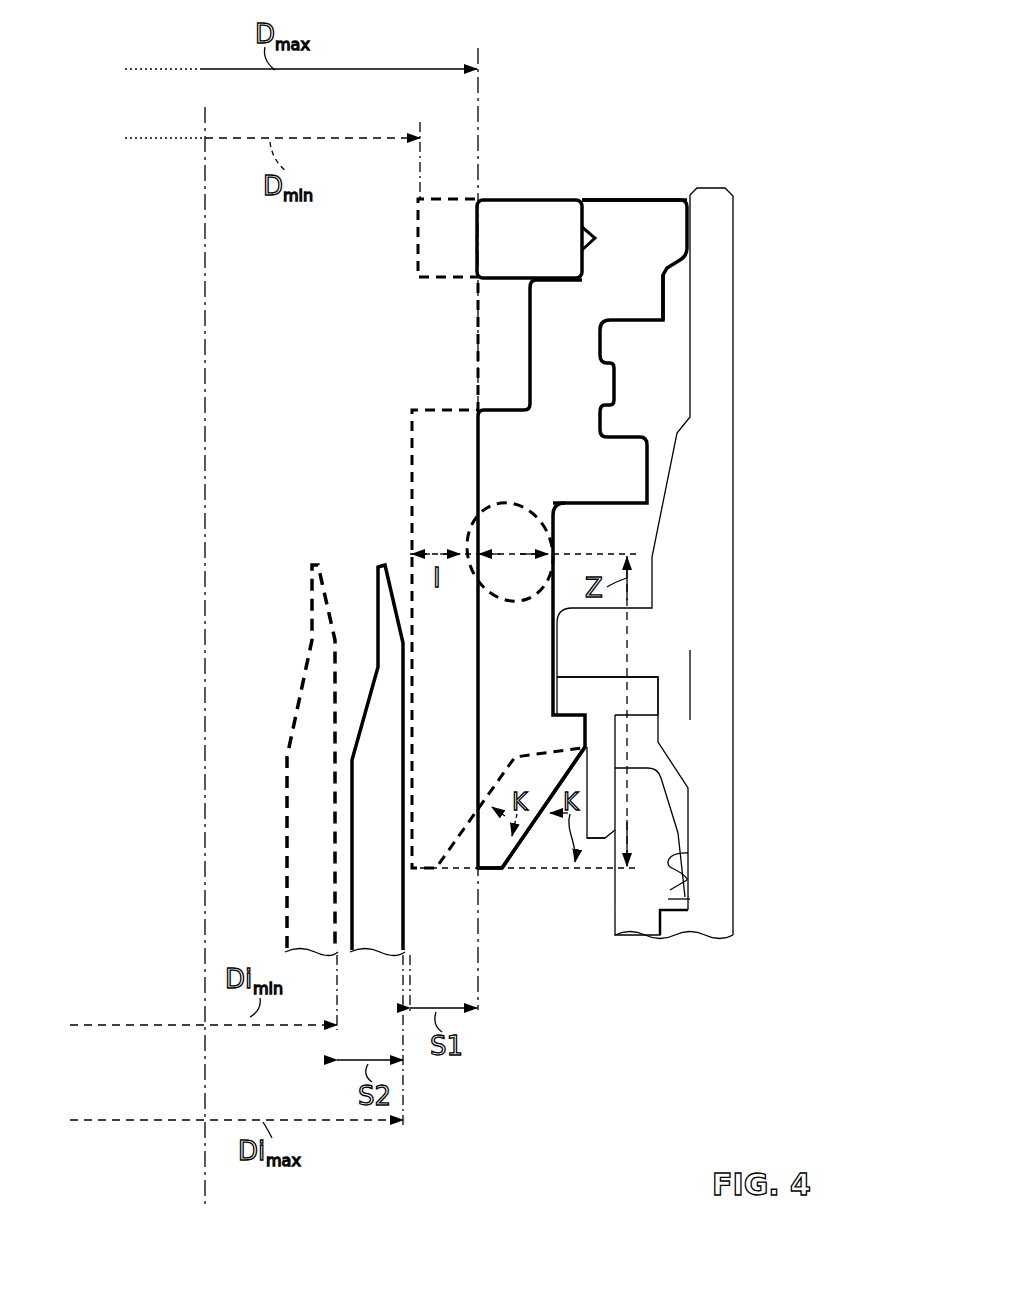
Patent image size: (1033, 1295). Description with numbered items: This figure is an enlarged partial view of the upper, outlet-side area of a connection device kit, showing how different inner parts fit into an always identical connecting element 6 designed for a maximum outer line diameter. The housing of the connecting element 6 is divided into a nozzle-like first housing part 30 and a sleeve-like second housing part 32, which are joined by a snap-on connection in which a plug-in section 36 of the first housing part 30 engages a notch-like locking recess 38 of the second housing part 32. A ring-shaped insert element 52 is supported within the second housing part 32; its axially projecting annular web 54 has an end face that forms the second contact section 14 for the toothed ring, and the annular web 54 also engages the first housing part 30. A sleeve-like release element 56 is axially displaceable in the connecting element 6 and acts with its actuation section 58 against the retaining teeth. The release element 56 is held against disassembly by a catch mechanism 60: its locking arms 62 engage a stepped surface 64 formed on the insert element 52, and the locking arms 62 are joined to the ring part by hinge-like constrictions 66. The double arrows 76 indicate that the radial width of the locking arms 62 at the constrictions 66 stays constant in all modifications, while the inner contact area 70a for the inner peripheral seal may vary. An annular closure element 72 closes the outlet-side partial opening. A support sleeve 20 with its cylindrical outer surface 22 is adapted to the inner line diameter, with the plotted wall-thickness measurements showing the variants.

The connecting element 6 is at (705, 688).
The second contact section 14 is at (588, 852).
The support sleeve 20 is at (380, 825).
The cylindrical outer surface 22 is at (336, 885).
The first housing part 30 is at (638, 930).
The second housing part 32 is at (714, 769).
The plug-in section 36 is at (690, 900).
The locking recess 38 is at (670, 855).
The insert element 52 is at (598, 695).
The annular web 54 is at (600, 812).
The release element 56 is at (647, 217).
The actuation section 58 is at (490, 864).
The catch mechanism 60 is at (562, 710).
The locking arms 62 is at (515, 660).
The stepped surface 64 is at (572, 730).
The hinge-like constrictions 66 is at (480, 542).
The inner contact area 70a is at (528, 322).
The closure element 72 is at (443, 213).
The double arrows 76 is at (438, 552).